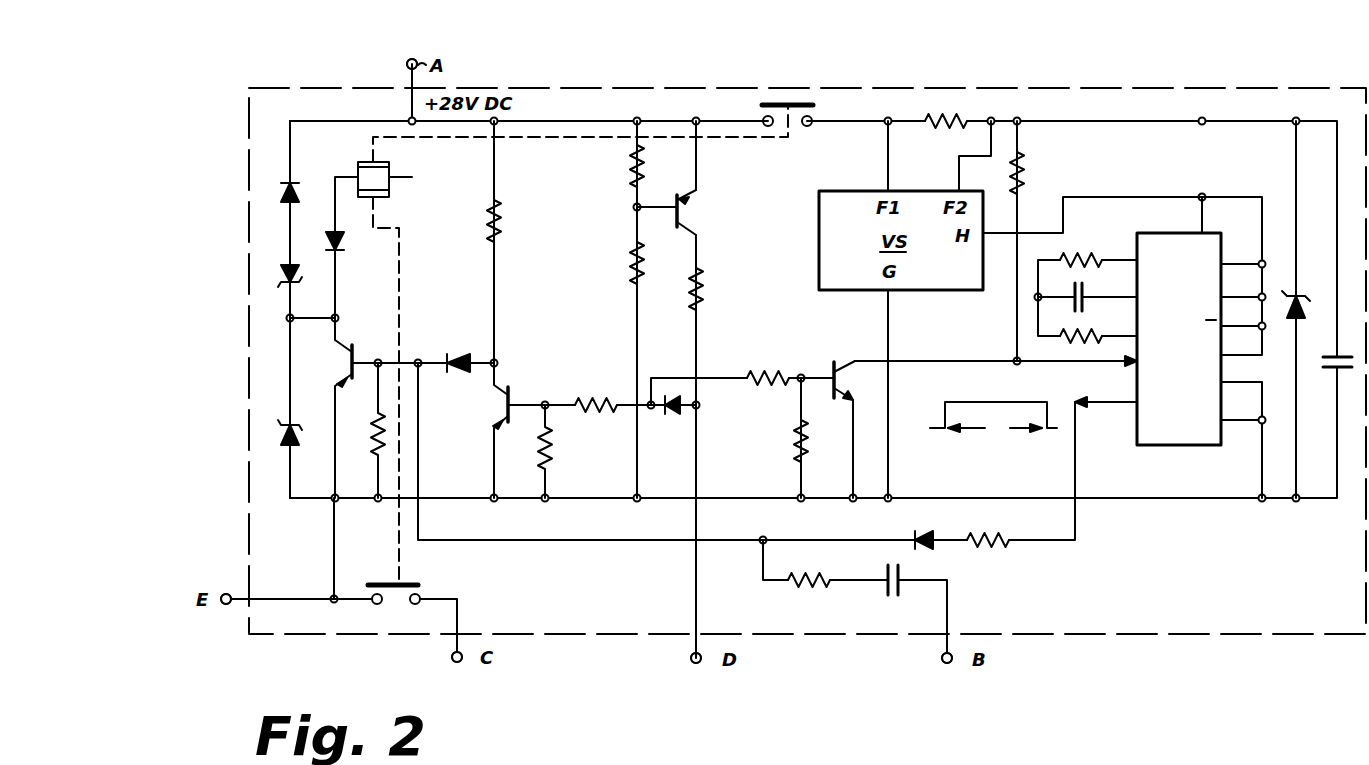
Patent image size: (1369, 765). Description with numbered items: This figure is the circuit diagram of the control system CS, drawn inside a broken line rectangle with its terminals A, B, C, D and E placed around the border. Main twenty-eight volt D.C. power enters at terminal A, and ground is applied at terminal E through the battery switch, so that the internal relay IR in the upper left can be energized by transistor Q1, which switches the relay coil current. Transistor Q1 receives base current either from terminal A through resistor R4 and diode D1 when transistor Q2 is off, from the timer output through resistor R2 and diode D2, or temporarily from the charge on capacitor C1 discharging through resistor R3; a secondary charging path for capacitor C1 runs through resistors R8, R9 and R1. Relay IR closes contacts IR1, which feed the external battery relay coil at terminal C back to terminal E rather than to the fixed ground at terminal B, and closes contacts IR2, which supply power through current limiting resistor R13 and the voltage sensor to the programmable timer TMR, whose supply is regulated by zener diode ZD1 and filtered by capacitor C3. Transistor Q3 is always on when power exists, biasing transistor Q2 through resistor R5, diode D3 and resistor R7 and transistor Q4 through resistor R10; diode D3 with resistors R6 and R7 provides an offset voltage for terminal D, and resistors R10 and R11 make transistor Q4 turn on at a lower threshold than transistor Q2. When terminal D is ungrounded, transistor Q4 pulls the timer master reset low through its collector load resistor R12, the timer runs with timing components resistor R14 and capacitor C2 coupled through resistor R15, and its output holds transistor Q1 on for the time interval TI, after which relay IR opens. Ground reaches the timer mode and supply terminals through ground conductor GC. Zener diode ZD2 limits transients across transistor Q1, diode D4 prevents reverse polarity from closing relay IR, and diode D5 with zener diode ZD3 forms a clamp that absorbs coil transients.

The internal relay IR is at (364, 162).
The relay contacts IR1 is at (418, 585).
The relay contacts IR2 is at (750, 111).
The control system CS is at (863, 88).
The ground conductor GC is at (1050, 497).
The programmable timer TMR is at (1192, 210).
The time interval TI is at (987, 416).
The diode D1 is at (463, 351).
The diode D2 is at (920, 532).
The diode D3 is at (668, 414).
The diode D4 is at (346, 245).
The diode D5 is at (292, 188).
The zener diode ZD1 is at (1306, 290).
The zener diode ZD2 is at (316, 407).
The zener diode ZD3 is at (276, 276).
The transistor Q1 is at (339, 363).
The transistor Q2 is at (505, 406).
The transistor Q3 is at (690, 212).
The transistor Q4 is at (840, 358).
The resistor R1 is at (376, 438).
The resistor R2 is at (990, 532).
The resistor R3 is at (814, 588).
The resistor R4 is at (502, 222).
The resistor R5 is at (704, 292).
The resistor R6 is at (552, 455).
The resistor R7 is at (601, 392).
The resistor R8 is at (628, 168).
The resistor R9 is at (628, 266).
The resistor R10 is at (784, 355).
The resistor R11 is at (794, 442).
The resistor R12 is at (1025, 170).
The resistor R13 is at (936, 116).
The resistor R14 is at (1080, 250).
The resistor R15 is at (1070, 342).
The capacitor C1 is at (890, 590).
The capacitor C2 is at (1090, 305).
The capacitor C3 is at (1318, 364).
The terminal A is at (424, 64).
The terminal B is at (961, 658).
The terminal C is at (471, 657).
The terminal D is at (710, 658).
The terminal E is at (220, 599).